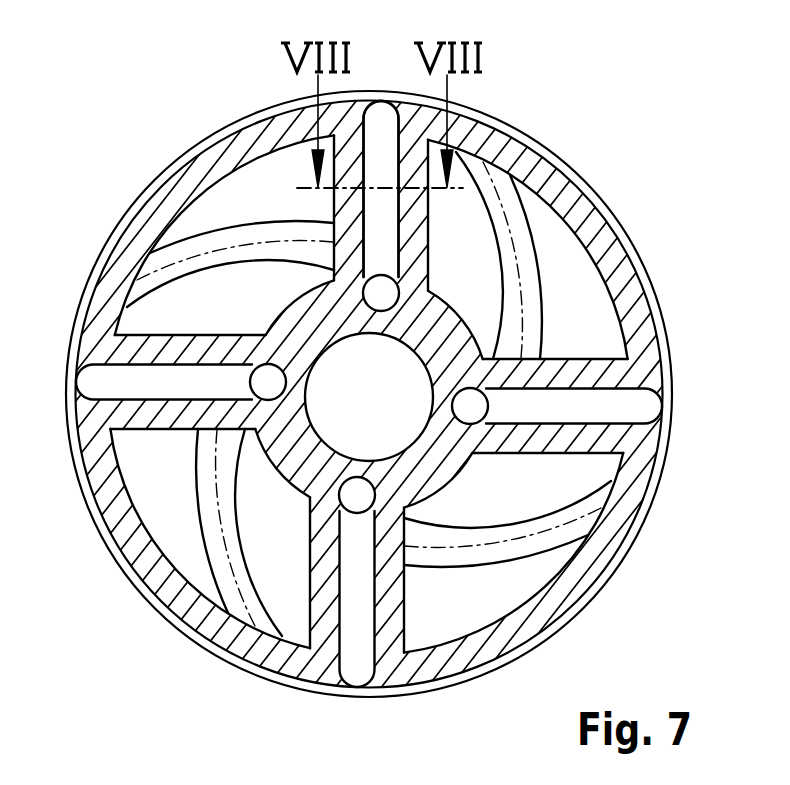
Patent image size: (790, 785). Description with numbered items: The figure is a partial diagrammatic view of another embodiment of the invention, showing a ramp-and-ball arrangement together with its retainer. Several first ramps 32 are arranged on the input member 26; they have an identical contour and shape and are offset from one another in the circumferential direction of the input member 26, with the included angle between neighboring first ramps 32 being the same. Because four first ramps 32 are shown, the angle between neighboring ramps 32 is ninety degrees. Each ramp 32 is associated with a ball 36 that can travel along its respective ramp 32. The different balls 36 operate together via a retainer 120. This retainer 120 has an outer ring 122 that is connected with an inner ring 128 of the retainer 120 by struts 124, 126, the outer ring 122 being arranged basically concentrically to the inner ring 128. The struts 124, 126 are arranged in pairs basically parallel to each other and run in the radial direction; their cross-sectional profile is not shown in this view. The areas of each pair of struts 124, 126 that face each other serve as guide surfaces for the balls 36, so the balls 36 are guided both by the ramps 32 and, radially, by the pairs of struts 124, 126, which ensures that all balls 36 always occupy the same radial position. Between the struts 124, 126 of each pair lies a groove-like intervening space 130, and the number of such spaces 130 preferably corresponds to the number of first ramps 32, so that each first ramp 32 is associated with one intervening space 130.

The input member 26 is at (563, 253).
The first ramp 32 is at (205, 240).
The ball 36 is at (400, 255).
The retainer 120 is at (623, 280).
The outer ring 122 is at (645, 323).
The strut 124 is at (420, 265).
The strut 126 is at (333, 207).
The inner ring 128 is at (323, 335).
The intervening space 130 is at (386, 120).